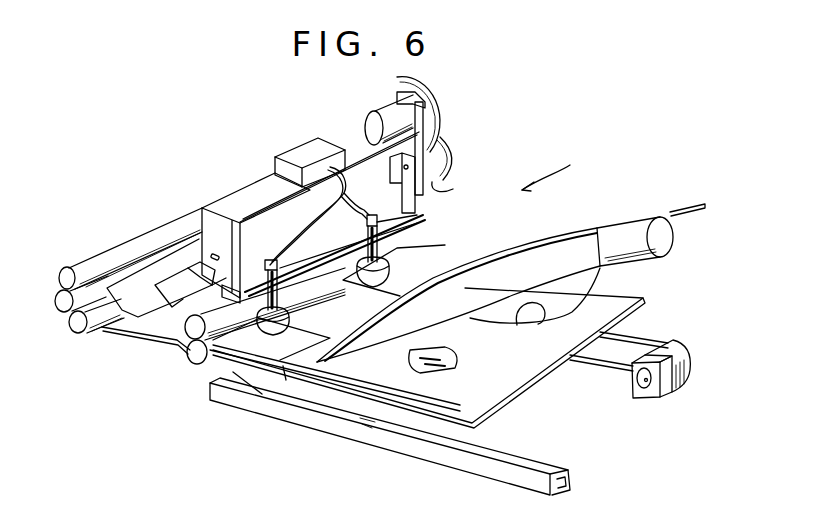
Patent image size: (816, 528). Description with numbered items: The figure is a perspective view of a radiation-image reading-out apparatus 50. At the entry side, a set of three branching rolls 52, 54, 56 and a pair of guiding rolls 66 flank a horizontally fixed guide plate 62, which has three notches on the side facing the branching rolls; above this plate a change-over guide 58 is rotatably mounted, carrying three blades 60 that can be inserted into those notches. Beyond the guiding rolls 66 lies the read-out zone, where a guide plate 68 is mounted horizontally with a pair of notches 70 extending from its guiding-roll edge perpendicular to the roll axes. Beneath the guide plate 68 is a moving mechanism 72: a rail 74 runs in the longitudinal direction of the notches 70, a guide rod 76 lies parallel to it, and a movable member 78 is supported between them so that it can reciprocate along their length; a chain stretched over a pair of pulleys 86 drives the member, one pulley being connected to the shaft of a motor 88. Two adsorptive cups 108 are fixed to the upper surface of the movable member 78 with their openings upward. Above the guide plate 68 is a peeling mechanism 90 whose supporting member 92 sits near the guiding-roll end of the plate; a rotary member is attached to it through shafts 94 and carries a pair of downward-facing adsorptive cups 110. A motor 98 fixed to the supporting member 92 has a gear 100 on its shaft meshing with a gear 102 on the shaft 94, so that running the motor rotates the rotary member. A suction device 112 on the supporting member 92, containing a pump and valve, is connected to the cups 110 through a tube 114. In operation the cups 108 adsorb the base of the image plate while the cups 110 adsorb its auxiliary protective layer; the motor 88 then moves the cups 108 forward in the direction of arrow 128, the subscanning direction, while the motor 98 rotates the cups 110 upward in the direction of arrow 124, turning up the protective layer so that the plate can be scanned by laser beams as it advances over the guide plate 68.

The radiation-image reading-out apparatus 50 is at (582, 162).
The branching roll 52 is at (85, 332).
The branching roll 54 is at (64, 312).
The branching roll 56 is at (67, 267).
The change-over guide 58 is at (137, 304).
The blades 60 is at (272, 234).
The guide plate 62 is at (150, 340).
The guiding rolls 66 is at (196, 364).
The guide plate 68 is at (512, 385).
The notches 70 is at (520, 323).
The moving mechanism 72 is at (346, 454).
The rail 74 is at (492, 470).
The guide rod 76 is at (632, 330).
The movable member 78 is at (270, 395).
The pulleys 86 is at (642, 388).
The motor 88 is at (682, 347).
The peeling mechanism 90 is at (203, 189).
The supporting member 92 is at (240, 205).
The shafts 94 is at (414, 202).
The motor 98 is at (375, 116).
The gear 100 is at (448, 118).
The gear 102 is at (442, 190).
The adsorptive cups 108 is at (390, 280).
The adsorptive cups 110 is at (290, 315).
The suction device 112 is at (300, 156).
The tube 114 is at (344, 185).
The arrow 124 is at (456, 158).
The arrow 128 is at (427, 372).